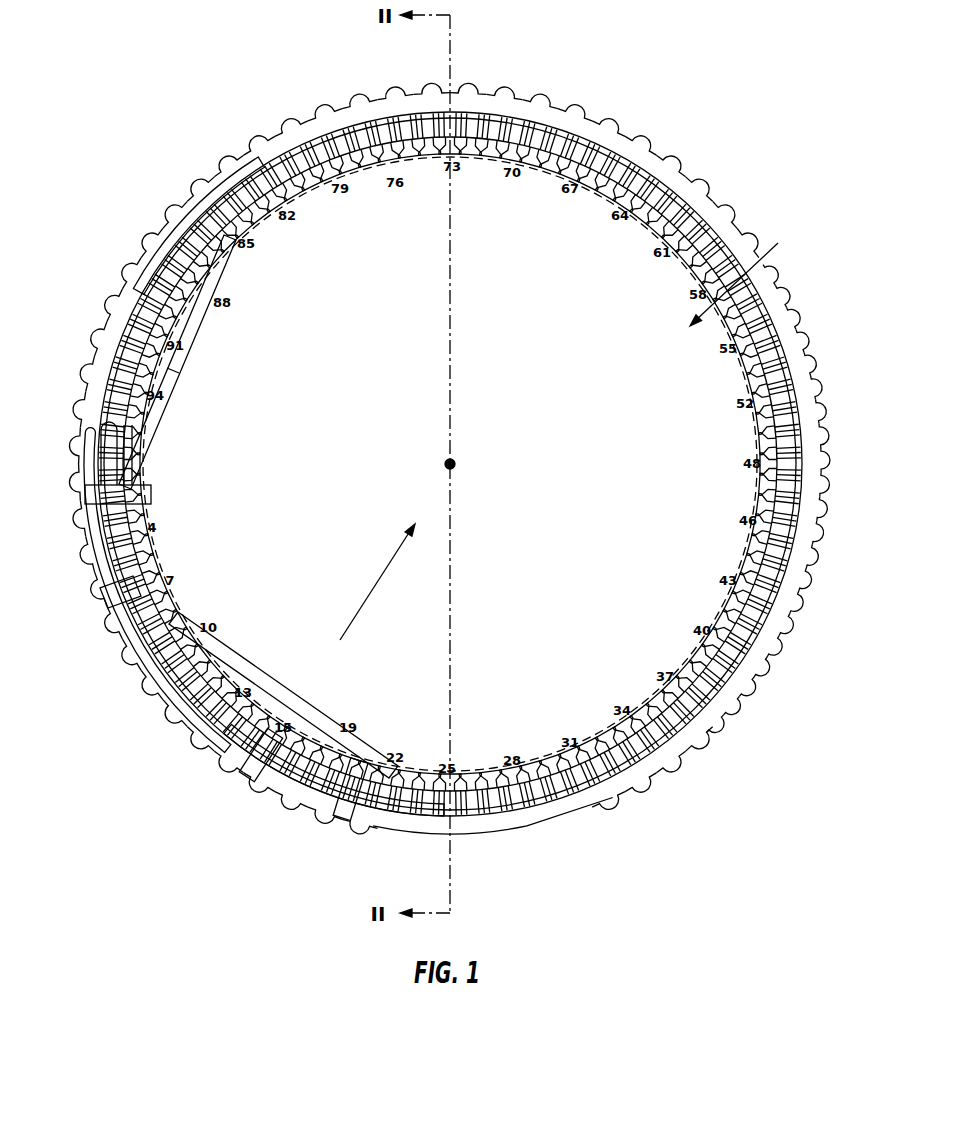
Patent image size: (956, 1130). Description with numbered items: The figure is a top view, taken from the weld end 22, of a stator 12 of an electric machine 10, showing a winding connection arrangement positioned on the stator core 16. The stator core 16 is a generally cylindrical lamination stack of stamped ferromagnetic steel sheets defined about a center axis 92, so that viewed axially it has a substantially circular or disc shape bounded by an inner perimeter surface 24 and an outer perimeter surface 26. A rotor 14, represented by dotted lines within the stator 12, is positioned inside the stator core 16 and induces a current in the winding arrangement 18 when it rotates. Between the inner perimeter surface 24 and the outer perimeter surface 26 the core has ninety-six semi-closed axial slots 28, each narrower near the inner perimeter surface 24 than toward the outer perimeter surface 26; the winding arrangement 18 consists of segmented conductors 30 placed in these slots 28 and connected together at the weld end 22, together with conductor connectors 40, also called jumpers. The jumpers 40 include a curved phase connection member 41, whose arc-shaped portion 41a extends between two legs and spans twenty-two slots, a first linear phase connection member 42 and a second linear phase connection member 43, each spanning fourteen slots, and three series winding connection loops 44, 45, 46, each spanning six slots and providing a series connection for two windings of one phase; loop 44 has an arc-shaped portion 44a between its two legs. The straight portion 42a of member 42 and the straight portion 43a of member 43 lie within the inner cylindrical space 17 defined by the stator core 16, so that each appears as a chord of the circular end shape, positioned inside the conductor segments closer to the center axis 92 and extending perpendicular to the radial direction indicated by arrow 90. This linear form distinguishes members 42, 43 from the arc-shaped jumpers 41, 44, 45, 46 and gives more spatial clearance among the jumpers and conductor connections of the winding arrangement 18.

The electric machine 10 is at (712, 130).
The stator 12 is at (621, 126).
The rotor 14 is at (602, 205).
The stator core 16 is at (330, 108).
The inner cylindrical space 17 is at (750, 268).
The winding arrangement 18 is at (556, 135).
The weld end 22 is at (293, 128).
The inner perimeter surface 24 is at (757, 428).
The outer perimeter surface 26 is at (818, 352).
The axial slots 28 is at (428, 154).
The segmented conductors 30 is at (672, 728).
The conductor connectors 40 is at (216, 652).
The curved phase connection member 41 is at (178, 670).
The arc-shaped portion 41a is at (160, 645).
The first linear phase connection member 42 is at (200, 334).
The straight portion 42a is at (189, 360).
The second linear phase connection member 43 is at (267, 675).
The straight portion 43a is at (310, 703).
The series winding connection loop 44 is at (178, 232).
The arc-shaped portion 44a is at (193, 212).
The series winding connection loop 45 is at (95, 534).
The series winding connection loop 46 is at (285, 788).
The arrow 90 is at (377, 582).
The center axis 92 is at (458, 464).